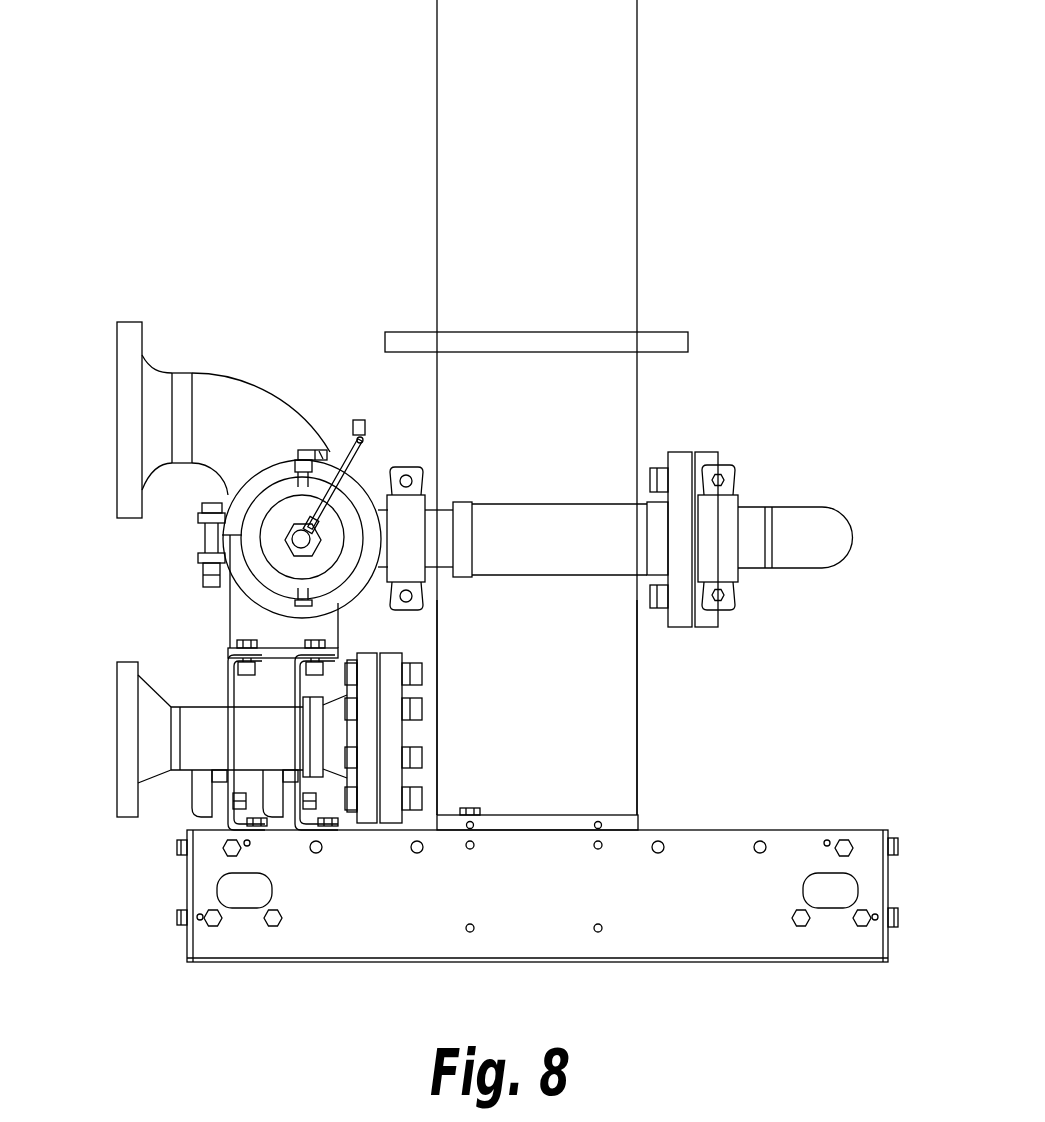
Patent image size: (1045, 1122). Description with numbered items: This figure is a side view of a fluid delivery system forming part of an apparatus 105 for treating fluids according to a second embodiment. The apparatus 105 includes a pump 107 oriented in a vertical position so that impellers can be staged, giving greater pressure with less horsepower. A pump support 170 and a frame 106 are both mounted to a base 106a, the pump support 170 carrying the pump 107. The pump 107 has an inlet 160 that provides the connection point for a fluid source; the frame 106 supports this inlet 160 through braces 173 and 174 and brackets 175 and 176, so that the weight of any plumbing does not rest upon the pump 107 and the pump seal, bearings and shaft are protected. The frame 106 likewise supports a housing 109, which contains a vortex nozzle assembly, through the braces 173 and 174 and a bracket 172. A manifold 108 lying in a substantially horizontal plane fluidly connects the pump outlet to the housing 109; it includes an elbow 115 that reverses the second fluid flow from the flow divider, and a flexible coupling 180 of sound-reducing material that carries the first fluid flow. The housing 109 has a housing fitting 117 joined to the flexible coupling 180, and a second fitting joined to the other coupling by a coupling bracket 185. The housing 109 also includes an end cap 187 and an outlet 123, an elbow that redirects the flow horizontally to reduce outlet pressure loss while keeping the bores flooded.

The apparatus for treating fluids 105 is at (764, 356).
The pump 107 is at (553, 207).
The pump support 170 is at (548, 689).
The base 106a is at (732, 822).
The outlet 123 is at (115, 398).
The bracket 172 is at (240, 613).
The end cap 187 is at (267, 487).
The housing fitting 117 is at (367, 513).
The housing 109 is at (240, 503).
The coupling bracket 185 is at (405, 467).
The flexible coupling 180 is at (569, 549).
The manifold 108 is at (728, 610).
The elbow 115 is at (798, 503).
The frame 106 is at (275, 737).
The inlet 160 is at (115, 740).
The brace 173 is at (218, 690).
The brace 174 is at (312, 688).
The bracket 175 is at (197, 797).
The bracket 176 is at (273, 818).